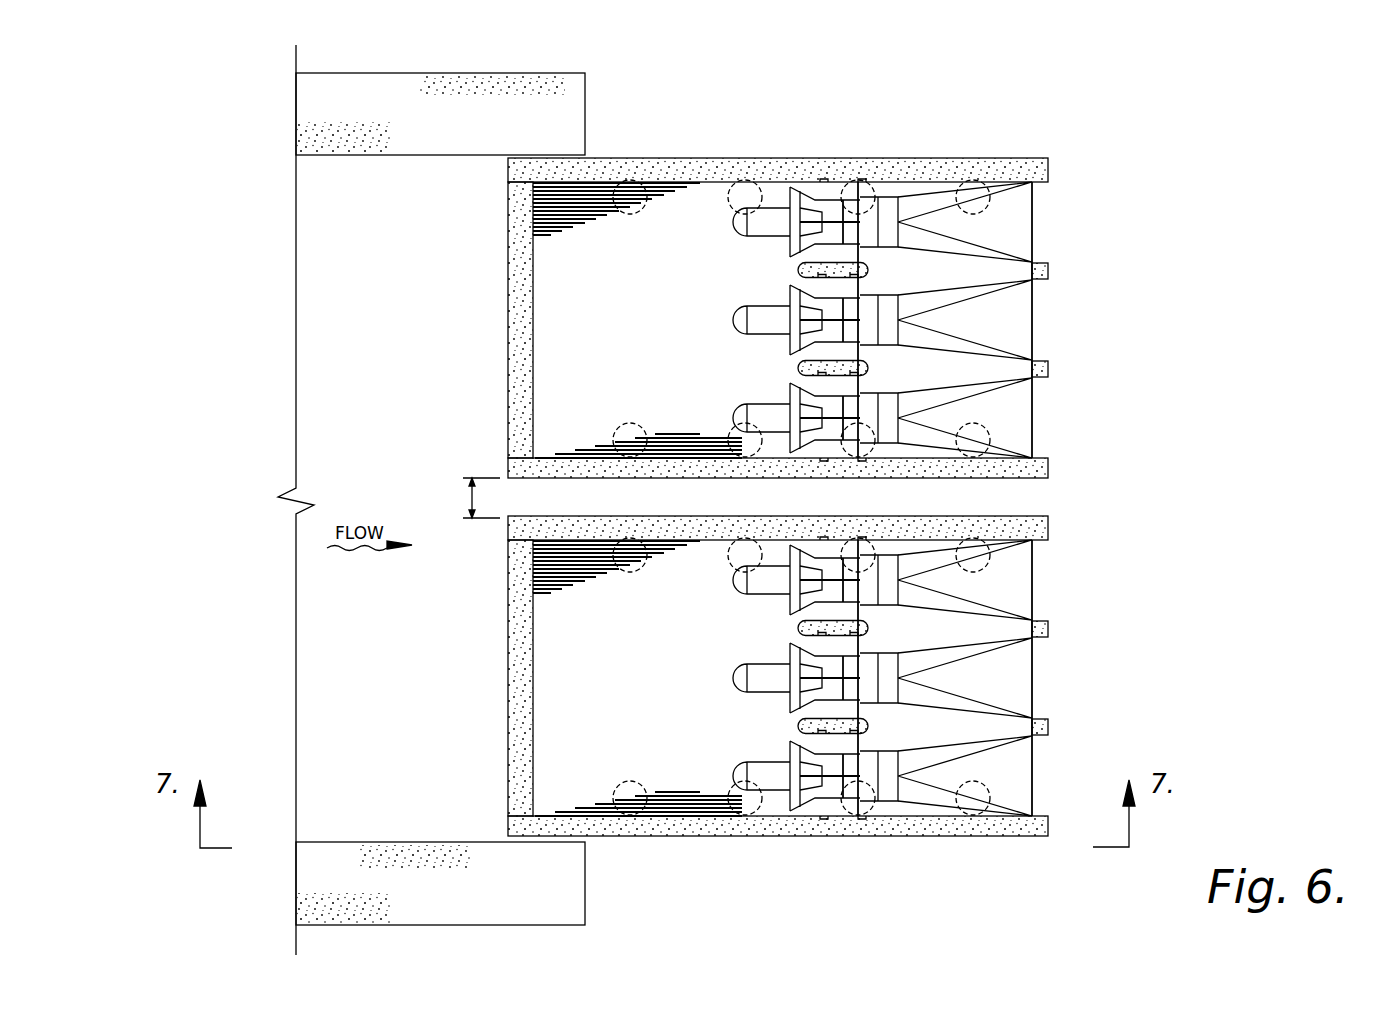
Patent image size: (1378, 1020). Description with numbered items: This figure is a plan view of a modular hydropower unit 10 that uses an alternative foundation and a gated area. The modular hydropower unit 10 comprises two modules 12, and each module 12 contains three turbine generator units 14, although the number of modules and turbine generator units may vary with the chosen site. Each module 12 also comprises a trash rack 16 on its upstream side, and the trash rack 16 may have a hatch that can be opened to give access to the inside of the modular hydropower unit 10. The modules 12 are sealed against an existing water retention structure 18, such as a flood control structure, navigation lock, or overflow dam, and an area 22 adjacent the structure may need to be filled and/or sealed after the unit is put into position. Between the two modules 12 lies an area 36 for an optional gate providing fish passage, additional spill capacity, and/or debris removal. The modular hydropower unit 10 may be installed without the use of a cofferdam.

The modular hydropower unit 10 is at (1070, 215).
The module 12 is at (1032, 160).
The turbine generator unit 14 is at (740, 308).
The trash rack 16 is at (558, 238).
The existing water retention structure 18 is at (585, 73).
The area 22 is at (508, 830).
The area for an optional gate 36 is at (470, 498).